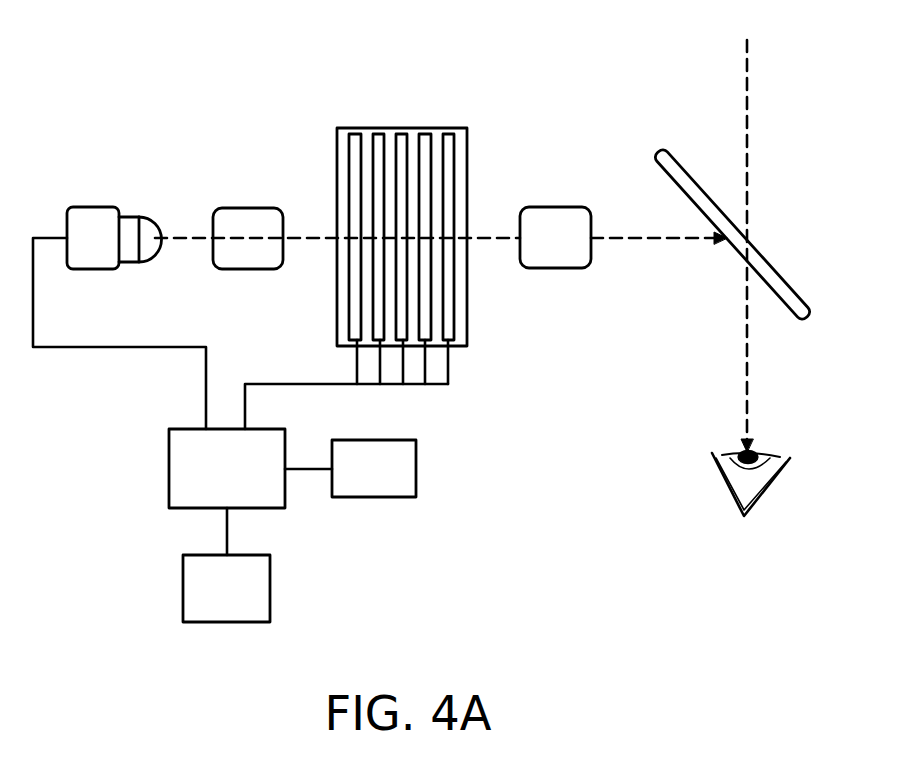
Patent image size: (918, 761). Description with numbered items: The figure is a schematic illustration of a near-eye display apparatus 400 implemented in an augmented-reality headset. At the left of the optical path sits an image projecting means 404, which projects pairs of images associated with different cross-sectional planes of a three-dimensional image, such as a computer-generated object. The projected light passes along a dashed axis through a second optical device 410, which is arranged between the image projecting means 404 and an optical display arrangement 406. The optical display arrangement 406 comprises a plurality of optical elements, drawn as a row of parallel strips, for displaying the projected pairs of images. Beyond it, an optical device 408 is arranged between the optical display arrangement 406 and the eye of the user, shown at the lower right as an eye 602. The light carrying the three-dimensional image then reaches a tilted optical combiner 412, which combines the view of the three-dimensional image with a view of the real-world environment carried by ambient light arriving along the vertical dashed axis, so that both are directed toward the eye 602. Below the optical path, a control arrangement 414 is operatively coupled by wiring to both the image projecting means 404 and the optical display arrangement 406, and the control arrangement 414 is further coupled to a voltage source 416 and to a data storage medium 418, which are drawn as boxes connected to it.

The near-eye display apparatus 400 is at (698, 38).
The image projecting means 404 is at (85, 207).
The optical display arrangement 406 is at (468, 303).
The optical device 408 is at (552, 207).
The second optical device 410 is at (233, 207).
The optical combiner 412 is at (662, 148).
The control arrangement 414 is at (250, 492).
The voltage source 416 is at (374, 468).
The data storage medium 418 is at (226, 588).
The eye 602 is at (720, 478).